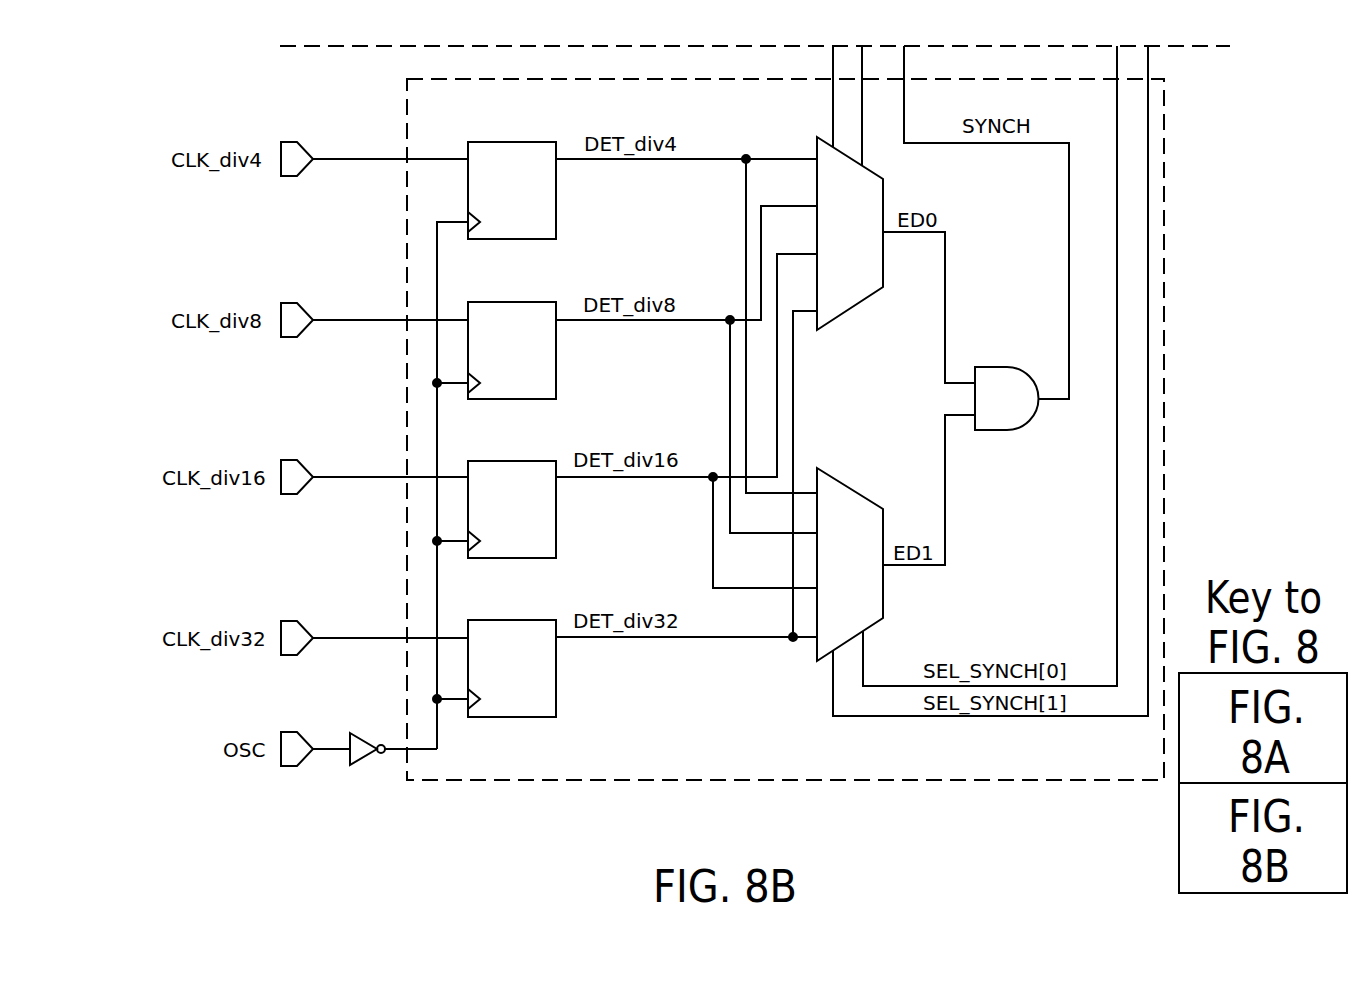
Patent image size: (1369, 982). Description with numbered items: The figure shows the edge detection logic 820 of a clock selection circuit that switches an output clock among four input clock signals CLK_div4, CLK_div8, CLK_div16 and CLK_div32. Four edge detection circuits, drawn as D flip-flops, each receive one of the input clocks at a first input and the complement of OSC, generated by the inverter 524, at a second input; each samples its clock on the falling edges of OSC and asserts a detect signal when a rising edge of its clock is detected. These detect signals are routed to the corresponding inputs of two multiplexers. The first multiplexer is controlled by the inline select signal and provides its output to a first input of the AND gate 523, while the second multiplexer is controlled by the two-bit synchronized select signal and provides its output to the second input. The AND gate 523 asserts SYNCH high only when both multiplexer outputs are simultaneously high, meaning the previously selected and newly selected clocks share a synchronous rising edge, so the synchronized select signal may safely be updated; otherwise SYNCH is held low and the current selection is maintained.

The edge detection logic 820 is at (1165, 256).
The AND gate 523 is at (1000, 367).
The inverter 524 is at (360, 762).